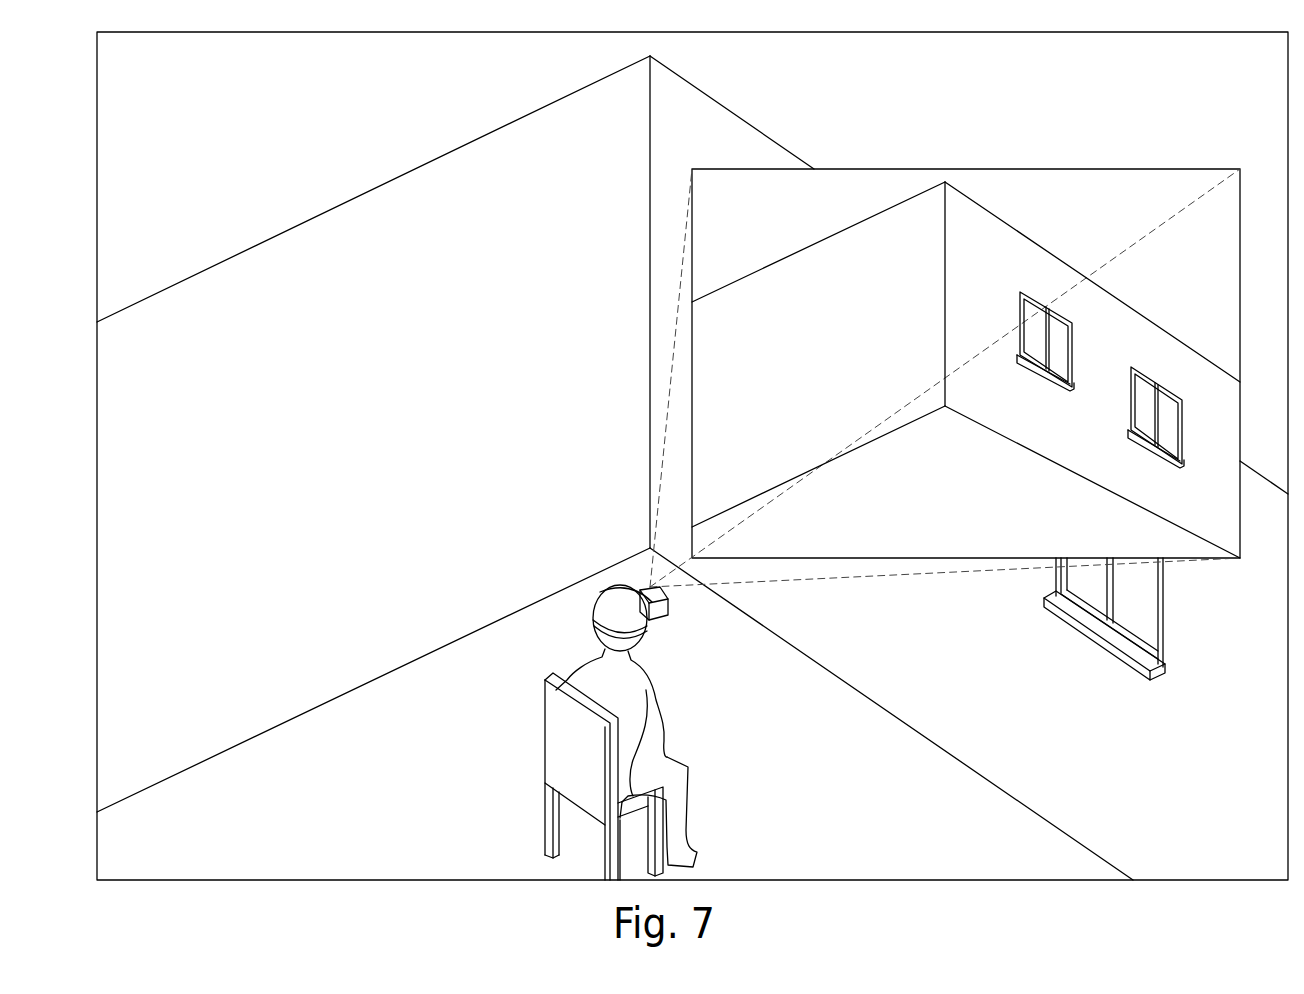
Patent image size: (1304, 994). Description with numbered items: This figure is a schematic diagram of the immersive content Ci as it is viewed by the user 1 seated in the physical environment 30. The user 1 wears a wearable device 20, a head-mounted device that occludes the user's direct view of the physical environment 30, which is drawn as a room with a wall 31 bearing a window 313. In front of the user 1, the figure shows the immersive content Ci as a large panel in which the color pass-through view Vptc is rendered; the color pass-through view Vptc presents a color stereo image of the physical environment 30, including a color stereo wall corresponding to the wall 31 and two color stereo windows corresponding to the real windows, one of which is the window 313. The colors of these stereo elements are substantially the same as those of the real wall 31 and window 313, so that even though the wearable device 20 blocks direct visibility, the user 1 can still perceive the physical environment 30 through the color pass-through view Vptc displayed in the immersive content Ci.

The physical environment 30 is at (318, 162).
The wall 31 is at (762, 130).
The window 313 is at (1163, 600).
The wearable device 20 is at (668, 615).
The user 1 is at (655, 708).
The immersive content Ci is at (873, 170).
The color pass-through view Vptc is at (805, 227).